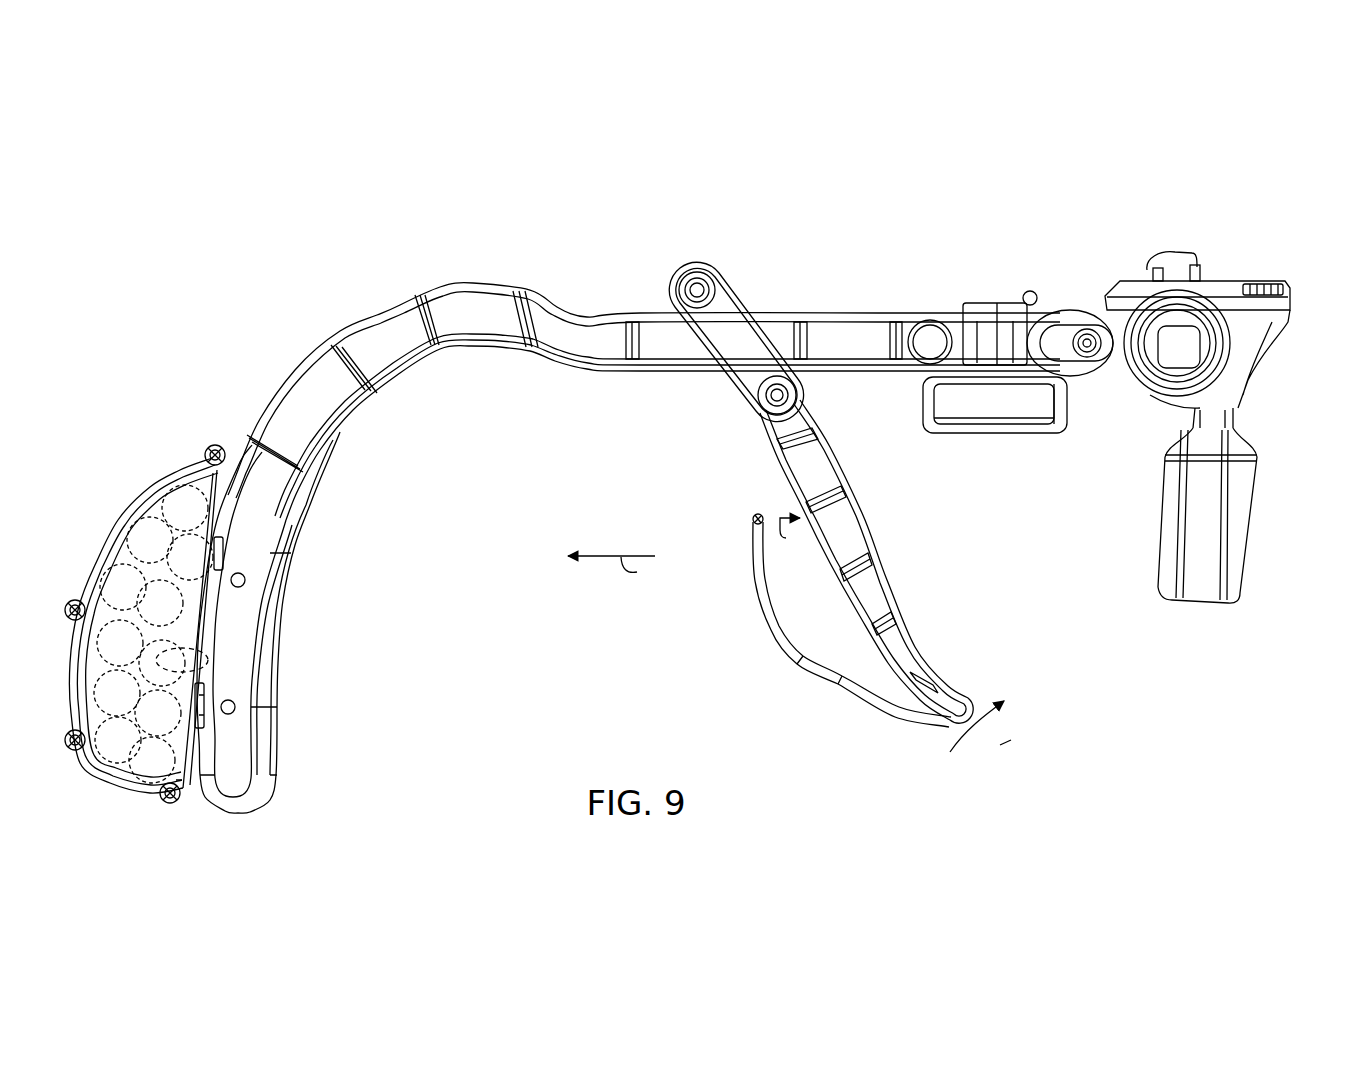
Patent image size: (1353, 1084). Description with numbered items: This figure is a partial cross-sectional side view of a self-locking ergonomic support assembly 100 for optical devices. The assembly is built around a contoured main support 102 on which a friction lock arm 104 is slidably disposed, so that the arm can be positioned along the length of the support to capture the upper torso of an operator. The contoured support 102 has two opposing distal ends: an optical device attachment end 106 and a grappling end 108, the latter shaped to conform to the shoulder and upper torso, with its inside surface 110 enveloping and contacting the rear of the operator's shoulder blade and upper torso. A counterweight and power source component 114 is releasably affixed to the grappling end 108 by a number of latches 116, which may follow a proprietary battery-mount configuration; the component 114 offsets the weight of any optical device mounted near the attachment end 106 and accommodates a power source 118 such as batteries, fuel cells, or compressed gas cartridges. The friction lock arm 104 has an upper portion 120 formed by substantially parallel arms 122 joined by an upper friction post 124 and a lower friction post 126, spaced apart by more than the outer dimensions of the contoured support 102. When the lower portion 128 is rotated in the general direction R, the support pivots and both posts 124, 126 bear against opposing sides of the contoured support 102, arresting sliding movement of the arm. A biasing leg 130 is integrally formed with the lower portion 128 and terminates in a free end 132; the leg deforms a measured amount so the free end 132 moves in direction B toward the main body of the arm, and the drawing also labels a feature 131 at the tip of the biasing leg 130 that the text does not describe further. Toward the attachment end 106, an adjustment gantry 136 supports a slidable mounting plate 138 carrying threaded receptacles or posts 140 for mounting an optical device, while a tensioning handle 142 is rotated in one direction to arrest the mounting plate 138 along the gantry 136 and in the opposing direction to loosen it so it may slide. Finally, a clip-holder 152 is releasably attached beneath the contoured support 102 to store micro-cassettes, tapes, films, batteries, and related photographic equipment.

The ergonomic support assembly 100 is at (270, 289).
The contoured main support 102 is at (588, 315).
The friction lock arm 104 is at (865, 503).
The optical device attachment end 106 is at (1240, 248).
The grappling end 108 is at (350, 545).
The inside surface 110 is at (283, 633).
The counterweight and power source component 114 is at (120, 506).
The latches 116 is at (225, 555).
The power source 118 is at (135, 650).
The upper portion 120 is at (779, 282).
The parallel arms 122 is at (740, 393).
The upper friction post 124 is at (697, 278).
The lower friction post 126 is at (803, 397).
The lower portion 128 is at (955, 636).
The biasing leg 130 is at (775, 618).
The blade tip 131 is at (752, 518).
The free end 132 is at (413, 345).
The adjustment gantry 136 is at (1142, 398).
The slidable mounting plate 138 is at (1255, 283).
The threaded receptacles or posts 140 is at (1147, 268).
The tensioning handle 142 is at (1165, 480).
The clip-holder 152 is at (1002, 431).